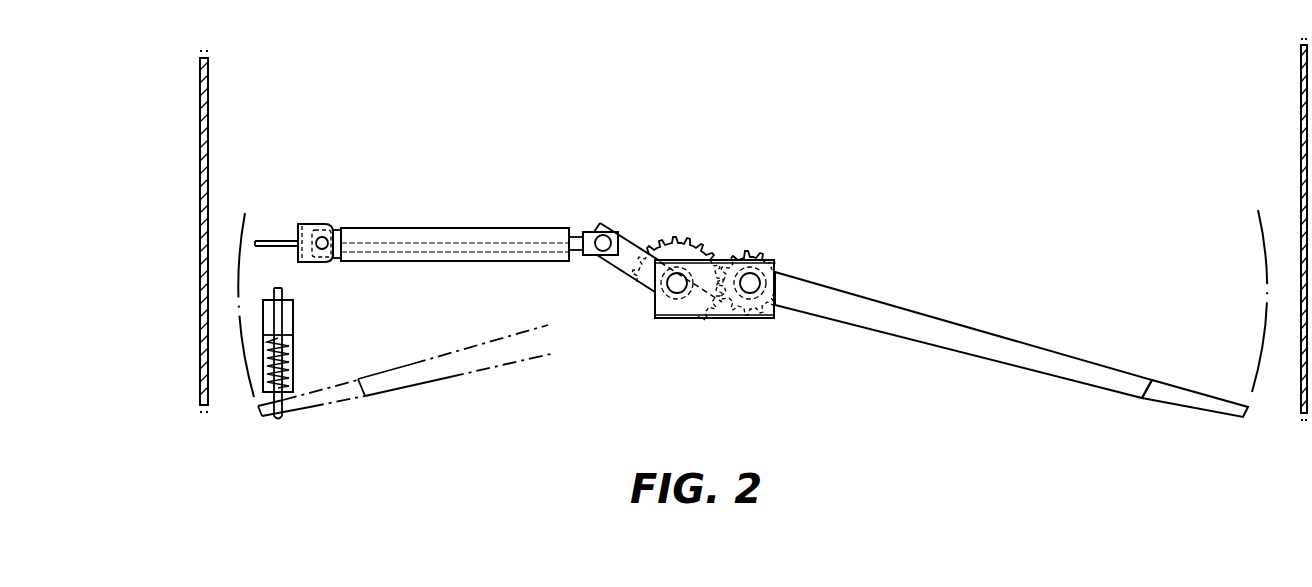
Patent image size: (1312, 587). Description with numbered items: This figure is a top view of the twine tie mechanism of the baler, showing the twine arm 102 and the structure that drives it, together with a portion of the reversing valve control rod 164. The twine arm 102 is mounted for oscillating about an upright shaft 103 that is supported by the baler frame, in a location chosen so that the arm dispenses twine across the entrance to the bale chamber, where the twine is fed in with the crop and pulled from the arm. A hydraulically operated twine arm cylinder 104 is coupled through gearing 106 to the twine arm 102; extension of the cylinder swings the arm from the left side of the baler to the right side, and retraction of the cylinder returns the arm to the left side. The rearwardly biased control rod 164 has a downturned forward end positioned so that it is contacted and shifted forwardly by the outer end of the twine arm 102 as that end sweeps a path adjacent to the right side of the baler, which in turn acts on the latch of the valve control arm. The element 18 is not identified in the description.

The wall 18 is at (209, 133).
The twine arm 102 is at (1012, 363).
The upright shaft 103 is at (776, 270).
The twine arm cylinder 104 is at (508, 228).
The gearing 106 is at (753, 200).
The control rod 164 is at (293, 313).